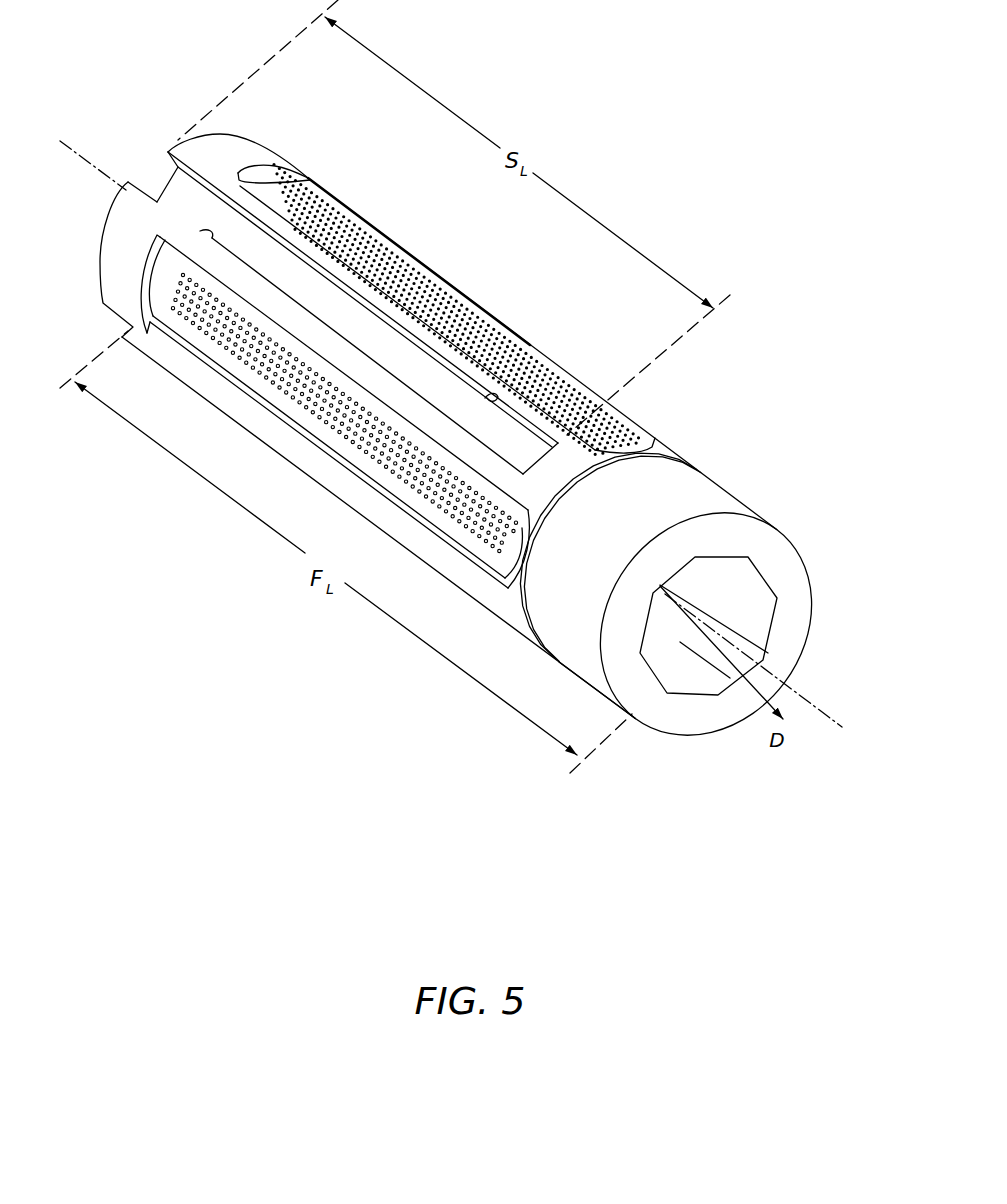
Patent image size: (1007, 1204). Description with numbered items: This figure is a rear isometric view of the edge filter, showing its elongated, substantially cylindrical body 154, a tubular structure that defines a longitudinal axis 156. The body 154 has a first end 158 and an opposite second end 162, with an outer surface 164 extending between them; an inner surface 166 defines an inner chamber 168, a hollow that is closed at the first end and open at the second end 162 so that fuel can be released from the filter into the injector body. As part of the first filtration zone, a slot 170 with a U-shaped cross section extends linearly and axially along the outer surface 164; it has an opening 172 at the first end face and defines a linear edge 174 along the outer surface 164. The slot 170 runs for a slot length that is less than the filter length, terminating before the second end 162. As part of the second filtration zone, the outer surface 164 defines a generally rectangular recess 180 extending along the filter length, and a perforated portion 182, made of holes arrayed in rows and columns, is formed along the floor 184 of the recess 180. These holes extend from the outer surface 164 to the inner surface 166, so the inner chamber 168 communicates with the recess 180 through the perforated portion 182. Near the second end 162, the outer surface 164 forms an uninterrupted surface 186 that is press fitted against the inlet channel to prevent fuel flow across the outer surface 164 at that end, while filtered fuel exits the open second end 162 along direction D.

The body 154 is at (730, 487).
The longitudinal axis 156 is at (816, 717).
The first end 158 is at (244, 155).
The second end 162 is at (797, 539).
The outer surface 164 is at (524, 623).
The inner surface 166 is at (651, 633).
The inner chamber 168 is at (716, 598).
The slot 170 is at (174, 171).
The opening 172 is at (146, 174).
The edge 174 is at (205, 231).
The recess 180 is at (334, 452).
The perforated portion 182 is at (460, 320).
The floor 184 is at (352, 258).
The uninterrupted surface 186 is at (583, 558).